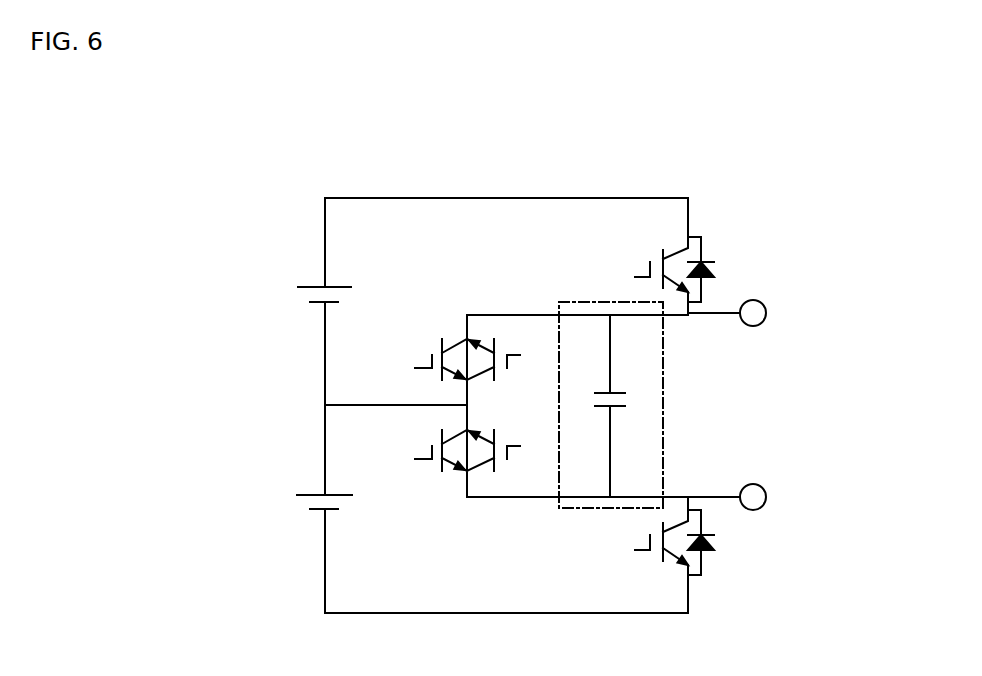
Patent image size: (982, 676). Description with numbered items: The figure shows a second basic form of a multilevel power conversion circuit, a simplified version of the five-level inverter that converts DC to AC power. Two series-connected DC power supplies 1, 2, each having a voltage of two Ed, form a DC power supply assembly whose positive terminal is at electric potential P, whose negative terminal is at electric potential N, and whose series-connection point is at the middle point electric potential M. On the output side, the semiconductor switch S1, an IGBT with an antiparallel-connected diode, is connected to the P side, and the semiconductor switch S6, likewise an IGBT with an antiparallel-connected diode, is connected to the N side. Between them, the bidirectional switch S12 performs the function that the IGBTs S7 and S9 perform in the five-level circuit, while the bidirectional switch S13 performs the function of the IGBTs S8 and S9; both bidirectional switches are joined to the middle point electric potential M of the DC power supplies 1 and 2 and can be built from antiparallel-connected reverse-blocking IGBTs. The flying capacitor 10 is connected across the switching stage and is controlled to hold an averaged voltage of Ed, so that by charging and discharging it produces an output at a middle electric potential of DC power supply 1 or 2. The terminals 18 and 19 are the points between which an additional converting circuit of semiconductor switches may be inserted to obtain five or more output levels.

The DC power supply 1 is at (320, 275).
The DC power supply 2 is at (316, 487).
The flying capacitor 10 is at (611, 405).
The terminal 18 is at (746, 313).
The terminal 19 is at (746, 497).
The semiconductor switch S1 is at (674, 256).
The semiconductor switch S6 is at (674, 555).
The bidirectional switch S12 is at (465, 369).
The bidirectional switch S13 is at (467, 471).